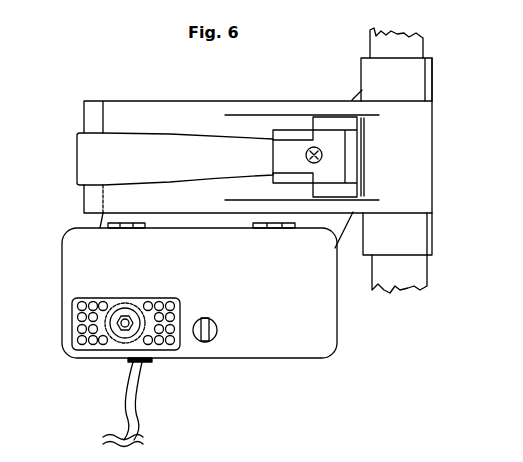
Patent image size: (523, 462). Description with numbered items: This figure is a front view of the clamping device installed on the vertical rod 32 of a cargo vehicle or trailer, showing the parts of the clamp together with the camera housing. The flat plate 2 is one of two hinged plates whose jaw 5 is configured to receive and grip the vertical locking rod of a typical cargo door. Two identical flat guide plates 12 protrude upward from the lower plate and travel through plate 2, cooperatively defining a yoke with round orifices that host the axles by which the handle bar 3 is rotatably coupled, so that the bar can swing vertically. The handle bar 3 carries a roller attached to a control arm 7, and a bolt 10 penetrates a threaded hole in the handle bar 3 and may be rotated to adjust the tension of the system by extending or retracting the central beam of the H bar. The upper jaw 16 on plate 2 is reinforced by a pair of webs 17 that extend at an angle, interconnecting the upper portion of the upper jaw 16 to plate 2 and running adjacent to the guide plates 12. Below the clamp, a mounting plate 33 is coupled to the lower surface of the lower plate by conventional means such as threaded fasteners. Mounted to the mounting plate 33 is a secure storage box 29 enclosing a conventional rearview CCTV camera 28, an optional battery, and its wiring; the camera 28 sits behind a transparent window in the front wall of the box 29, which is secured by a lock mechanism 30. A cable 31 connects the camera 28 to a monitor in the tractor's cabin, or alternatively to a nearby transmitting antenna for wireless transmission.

The flat plate 2 is at (200, 108).
The handle bar 3 is at (148, 138).
The jaw 5 is at (409, 82).
The control arm 7 is at (293, 137).
The bolt 10 is at (306, 153).
The flat guide plate 12 is at (338, 117).
The upper jaw 16 is at (399, 150).
The reinforcing web 17 is at (307, 103).
The rearview CCTV camera 28 is at (72, 324).
The secure storage box 29 is at (260, 343).
The lock mechanism 30 is at (208, 343).
The cable 31 is at (136, 390).
The vertical rod 32 is at (415, 50).
The mounting plate 33 is at (341, 228).